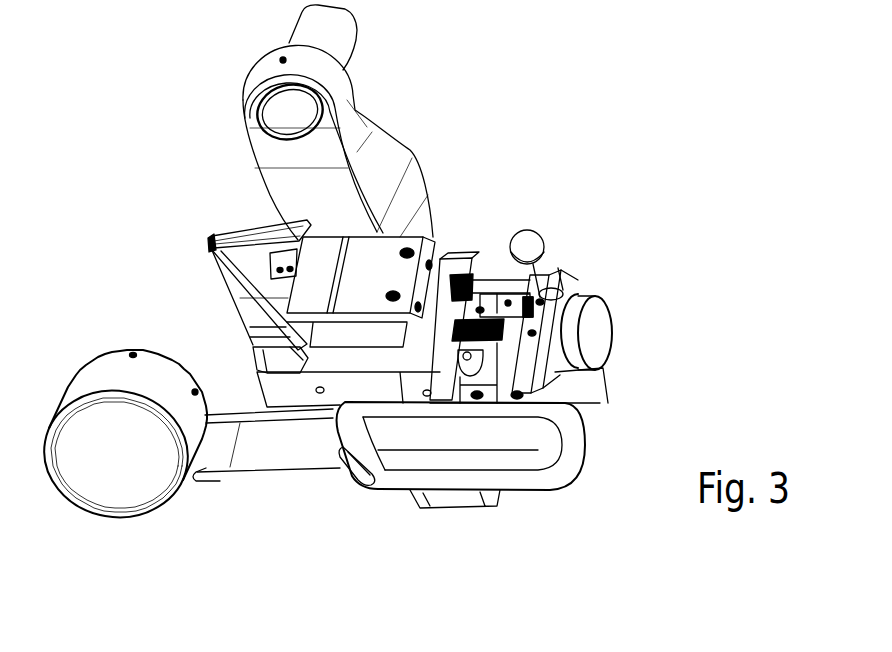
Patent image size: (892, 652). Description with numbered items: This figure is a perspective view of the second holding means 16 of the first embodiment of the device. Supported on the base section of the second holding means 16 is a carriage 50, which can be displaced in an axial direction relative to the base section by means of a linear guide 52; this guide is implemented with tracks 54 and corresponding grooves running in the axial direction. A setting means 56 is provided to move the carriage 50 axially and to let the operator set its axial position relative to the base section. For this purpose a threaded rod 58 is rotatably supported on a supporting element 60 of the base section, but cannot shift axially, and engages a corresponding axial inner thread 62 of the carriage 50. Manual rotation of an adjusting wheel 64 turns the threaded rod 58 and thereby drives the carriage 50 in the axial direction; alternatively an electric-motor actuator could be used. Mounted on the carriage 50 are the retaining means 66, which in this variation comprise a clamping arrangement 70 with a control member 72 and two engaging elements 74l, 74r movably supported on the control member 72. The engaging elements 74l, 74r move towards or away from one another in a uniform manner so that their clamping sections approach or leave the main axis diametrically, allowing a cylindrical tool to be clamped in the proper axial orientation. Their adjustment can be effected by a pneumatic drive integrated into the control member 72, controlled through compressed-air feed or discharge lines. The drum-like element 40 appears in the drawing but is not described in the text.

The second holding means 16 is at (620, 101).
The motor 40 is at (150, 350).
The carriage 50 is at (453, 262).
The linear guide 52 is at (484, 279).
The tracks 54 is at (499, 280).
The setting means 56 is at (603, 368).
The threaded rod 58 is at (487, 347).
The supporting element 60 is at (556, 266).
The axial inner thread 62 is at (455, 333).
The adjusting wheel 64 is at (602, 297).
The retaining means 66 is at (207, 240).
The clamping arrangement 70 is at (323, 240).
The control member 72 is at (388, 285).
The engaging element 74r is at (260, 226).
The engaging element 74l is at (243, 298).